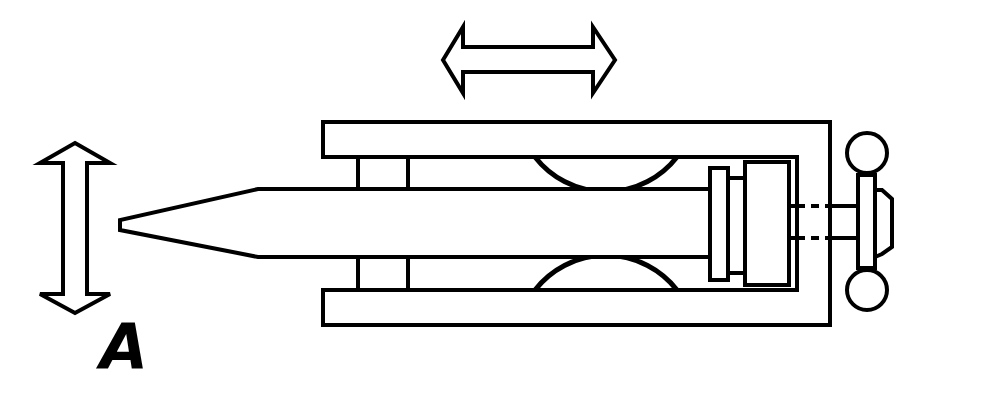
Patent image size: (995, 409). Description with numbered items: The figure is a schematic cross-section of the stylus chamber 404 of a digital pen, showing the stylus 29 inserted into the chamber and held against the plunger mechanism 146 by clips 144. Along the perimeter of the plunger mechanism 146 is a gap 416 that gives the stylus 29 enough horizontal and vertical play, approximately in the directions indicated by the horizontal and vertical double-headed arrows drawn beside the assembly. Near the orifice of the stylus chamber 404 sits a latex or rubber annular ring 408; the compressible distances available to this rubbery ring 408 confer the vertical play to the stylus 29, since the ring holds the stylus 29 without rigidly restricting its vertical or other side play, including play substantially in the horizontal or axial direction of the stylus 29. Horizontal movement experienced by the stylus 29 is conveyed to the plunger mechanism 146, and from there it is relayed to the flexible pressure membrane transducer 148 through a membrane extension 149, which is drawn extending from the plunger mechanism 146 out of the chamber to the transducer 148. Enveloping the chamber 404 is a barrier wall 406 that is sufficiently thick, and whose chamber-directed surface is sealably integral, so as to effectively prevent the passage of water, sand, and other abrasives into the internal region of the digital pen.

The stylus 29 is at (591, 236).
The barrier wall 406 is at (350, 130).
The stylus chamber 404 is at (482, 277).
The annular ring 408 is at (380, 272).
The clips 144 is at (581, 264).
The plunger mechanism 146 is at (775, 238).
The gap 416 is at (738, 167).
The flexible pressure membrane transducer 148 is at (857, 145).
The membrane extension 149 is at (842, 240).